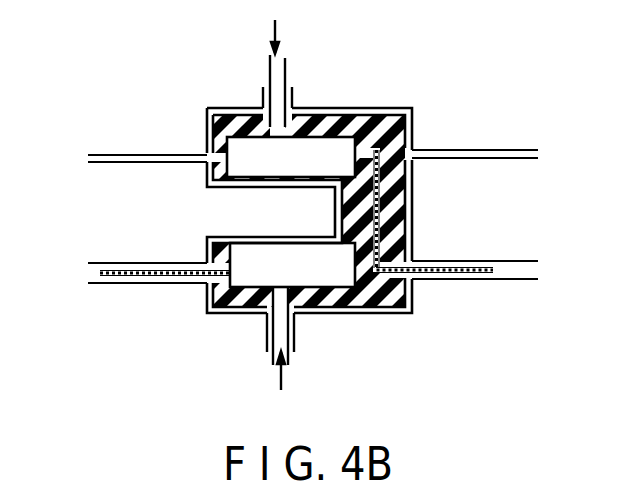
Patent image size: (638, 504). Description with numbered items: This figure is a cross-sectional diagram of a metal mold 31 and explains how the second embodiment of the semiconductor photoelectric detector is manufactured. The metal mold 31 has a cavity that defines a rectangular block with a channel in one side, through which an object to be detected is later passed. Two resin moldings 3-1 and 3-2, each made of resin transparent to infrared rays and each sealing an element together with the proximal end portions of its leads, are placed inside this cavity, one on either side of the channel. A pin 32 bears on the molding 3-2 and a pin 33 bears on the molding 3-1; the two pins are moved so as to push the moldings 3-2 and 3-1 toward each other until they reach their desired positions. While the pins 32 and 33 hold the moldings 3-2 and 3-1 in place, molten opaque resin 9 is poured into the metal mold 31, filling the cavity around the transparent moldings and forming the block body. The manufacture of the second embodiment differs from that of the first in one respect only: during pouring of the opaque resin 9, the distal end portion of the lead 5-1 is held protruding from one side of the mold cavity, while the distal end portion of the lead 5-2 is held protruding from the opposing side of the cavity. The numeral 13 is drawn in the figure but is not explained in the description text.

The opaque resin 9 is at (378, 303).
The molding 3-1 is at (246, 293).
The molding 3-2 is at (250, 117).
The pin 32 is at (273, 70).
The pin 33 is at (285, 338).
The port wall 13 is at (298, 113).
The metal mold 31 is at (339, 216).
The lead 5-1 is at (105, 274).
The lead 5-2 is at (366, 147).